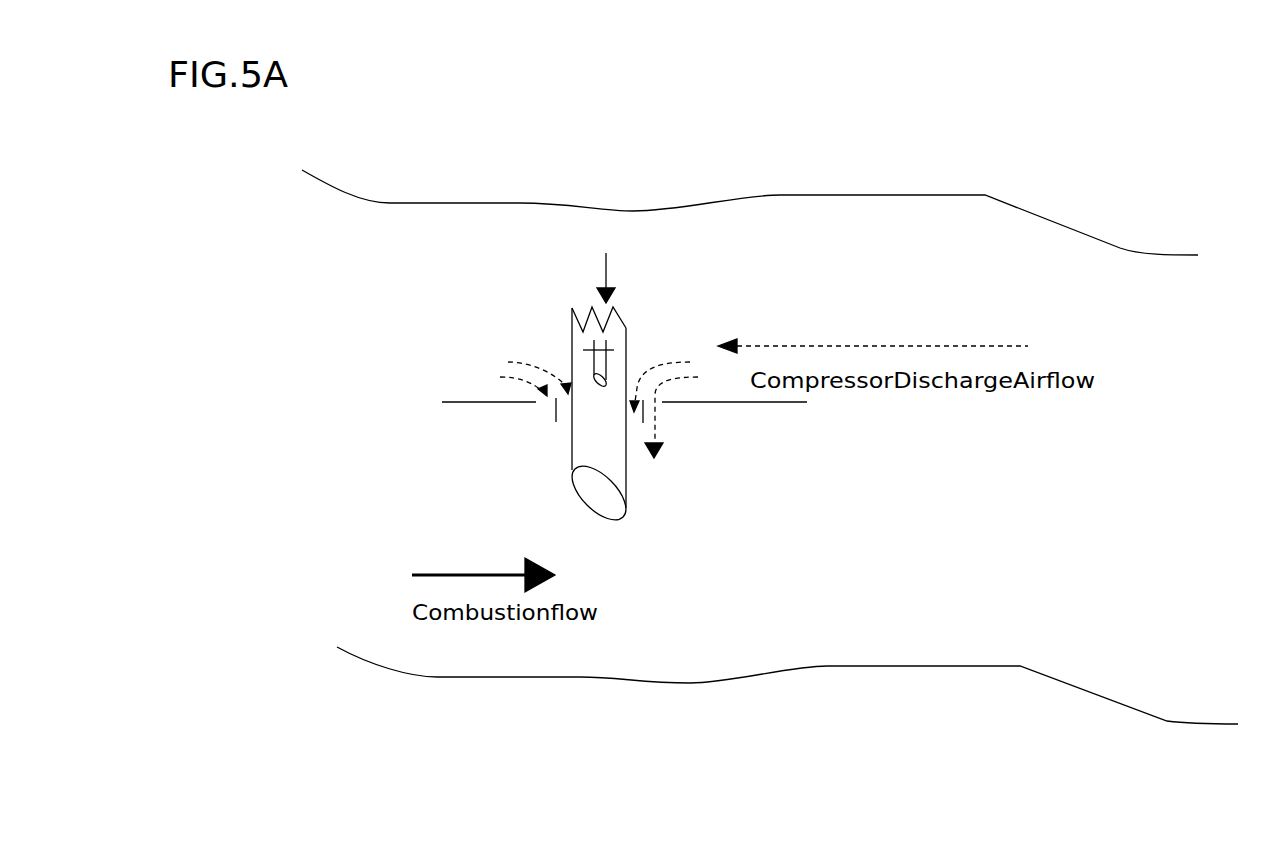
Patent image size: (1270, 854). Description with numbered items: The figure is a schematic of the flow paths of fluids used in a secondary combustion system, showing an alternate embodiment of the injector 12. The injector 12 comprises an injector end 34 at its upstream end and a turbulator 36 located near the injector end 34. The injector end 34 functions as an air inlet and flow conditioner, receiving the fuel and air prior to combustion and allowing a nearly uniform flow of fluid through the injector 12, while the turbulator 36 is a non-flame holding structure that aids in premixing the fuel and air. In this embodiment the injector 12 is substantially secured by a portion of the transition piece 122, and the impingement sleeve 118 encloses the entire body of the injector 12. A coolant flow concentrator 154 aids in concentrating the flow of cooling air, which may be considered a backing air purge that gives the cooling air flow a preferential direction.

The injector 12 is at (652, 506).
The injector end 34 is at (578, 303).
The turbulator 36 is at (578, 361).
The impingement sleeve 118 is at (307, 173).
The transition piece 122 is at (457, 402).
The coolant flow concentrator 154 is at (556, 413).